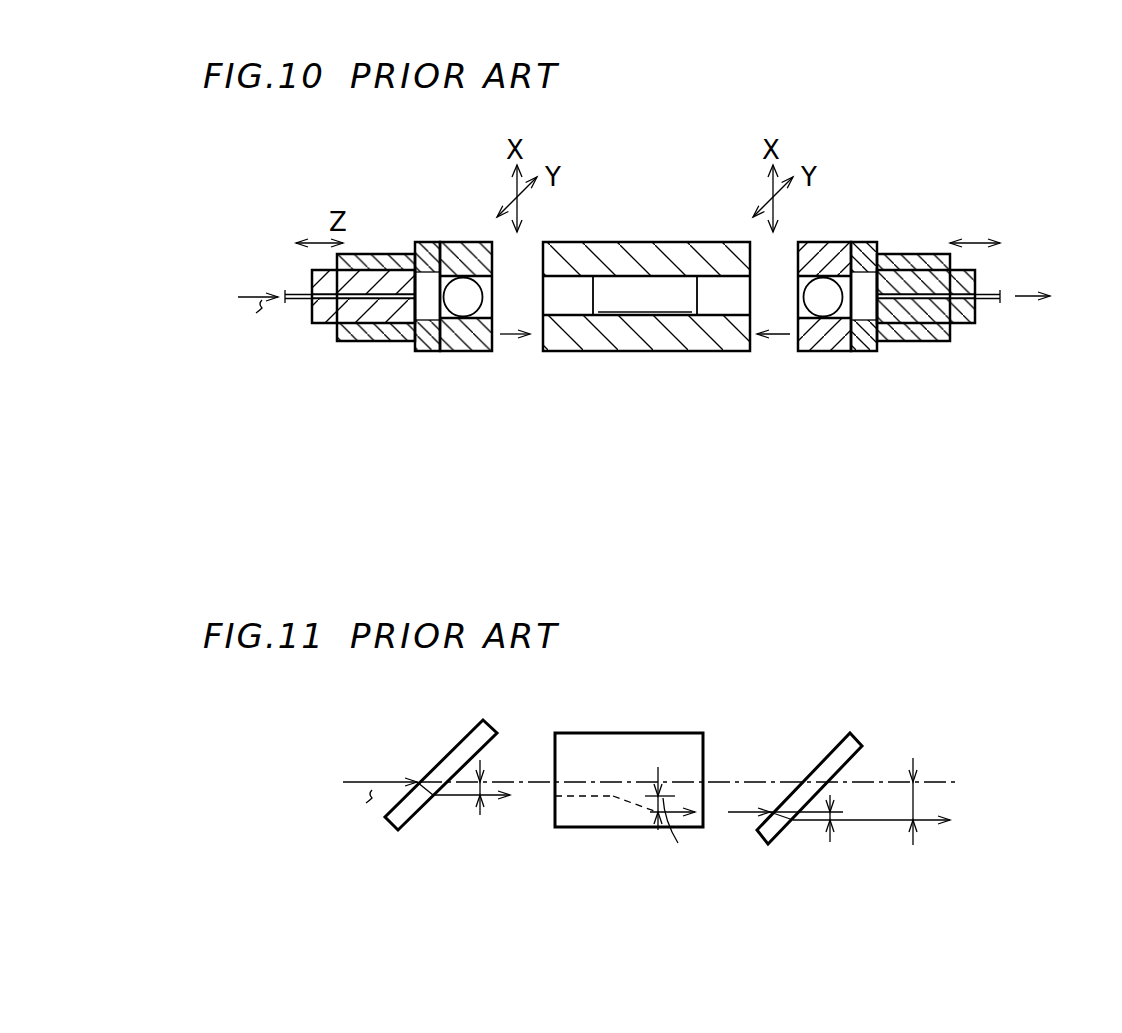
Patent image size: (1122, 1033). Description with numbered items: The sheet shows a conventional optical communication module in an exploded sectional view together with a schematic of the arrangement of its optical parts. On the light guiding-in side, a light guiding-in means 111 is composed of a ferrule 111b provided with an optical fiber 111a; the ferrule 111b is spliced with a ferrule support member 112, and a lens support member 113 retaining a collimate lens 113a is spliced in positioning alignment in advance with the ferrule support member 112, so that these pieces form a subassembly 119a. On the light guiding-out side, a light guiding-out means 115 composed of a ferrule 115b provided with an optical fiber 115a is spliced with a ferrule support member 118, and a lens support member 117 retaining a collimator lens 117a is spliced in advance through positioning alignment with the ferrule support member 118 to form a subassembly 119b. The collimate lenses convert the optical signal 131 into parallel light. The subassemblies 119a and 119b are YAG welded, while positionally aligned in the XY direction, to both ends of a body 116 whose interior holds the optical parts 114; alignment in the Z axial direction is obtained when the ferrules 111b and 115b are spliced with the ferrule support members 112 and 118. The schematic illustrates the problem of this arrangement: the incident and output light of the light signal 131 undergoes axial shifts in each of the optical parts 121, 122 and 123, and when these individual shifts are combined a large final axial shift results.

In FIG. 10, the light guiding-in means 111 is at (291, 341).
In FIG. 10, the optical fiber 111a is at (298, 300).
In FIG. 10, the ferrule 111b is at (322, 321).
In FIG. 10, the ferrule support member 112 is at (418, 352).
In FIG. 10, the lens support member 113 is at (460, 320).
In FIG. 10, the collimate lens 113a is at (478, 298).
In FIG. 10, the optical parts 114 is at (633, 312).
In FIG. 10, the light guiding-out means 115 is at (985, 354).
In FIG. 10, the optical fiber 115a is at (982, 337).
In FIG. 10, the ferrule 115b is at (962, 327).
In FIG. 10, the body 116 is at (592, 250).
In FIG. 10, the lens support member 117 is at (826, 329).
In FIG. 10, the collimator lens 117a is at (808, 295).
In FIG. 10, the ferrule support member 118 is at (860, 352).
In FIG. 10, the subassembly 119a is at (336, 348).
In FIG. 10, the subassembly 119b is at (930, 356).
In FIG. 11, the optical part 121 is at (397, 828).
In FIG. 11, the optical part 122 is at (612, 825).
In FIG. 11, the optical part 123 is at (835, 758).
In FIG. 10, the optical signal 131 is at (260, 296).
In FIG. 11, the optical signal 131 is at (390, 782).